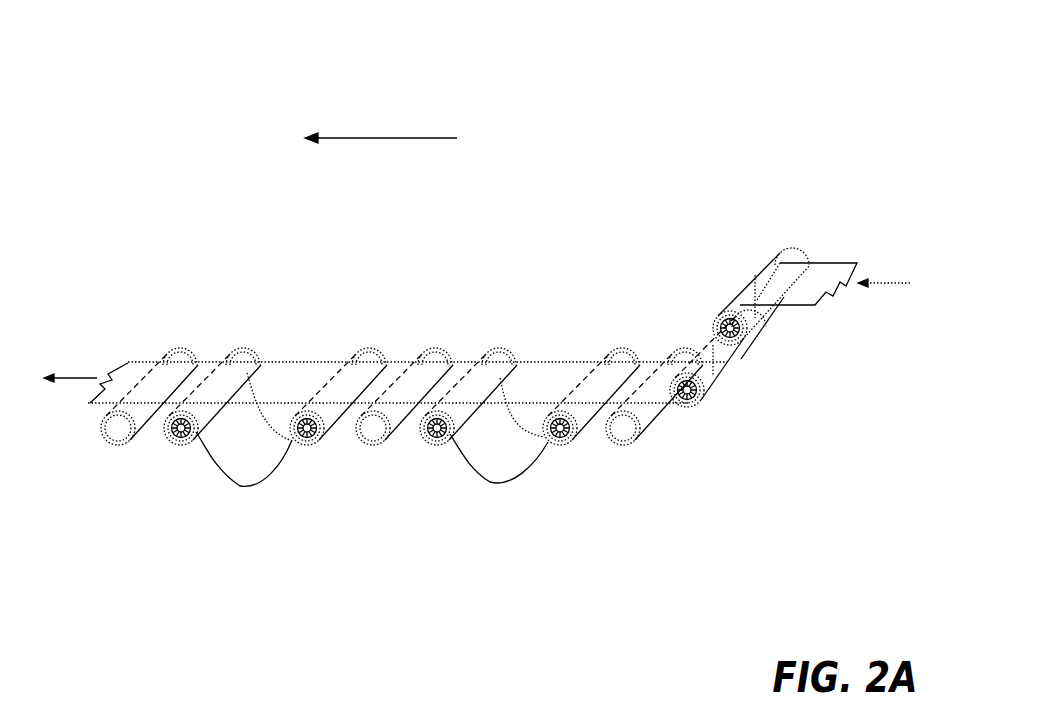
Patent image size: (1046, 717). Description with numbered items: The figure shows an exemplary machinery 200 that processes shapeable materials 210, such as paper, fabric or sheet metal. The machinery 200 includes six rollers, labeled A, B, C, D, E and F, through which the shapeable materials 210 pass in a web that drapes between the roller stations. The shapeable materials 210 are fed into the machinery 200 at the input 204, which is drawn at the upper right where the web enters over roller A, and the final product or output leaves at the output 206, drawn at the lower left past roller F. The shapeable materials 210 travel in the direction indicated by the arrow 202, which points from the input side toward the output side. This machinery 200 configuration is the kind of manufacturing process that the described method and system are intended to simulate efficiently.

The machinery 200 is at (866, 73).
The arrow 202 is at (381, 124).
The input 204 is at (880, 253).
The output 206 is at (100, 352).
The shapeable materials 210 is at (652, 363).